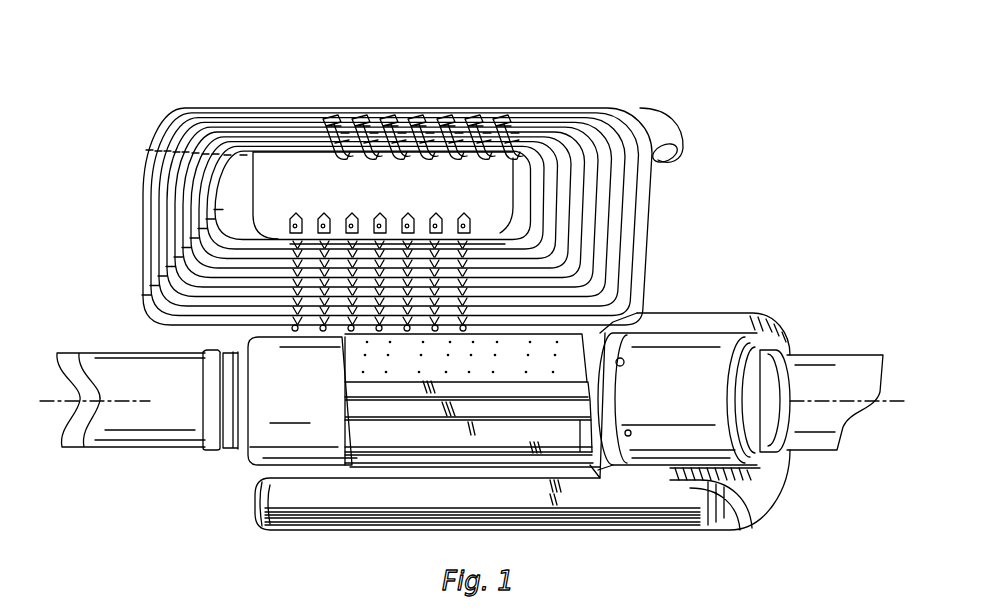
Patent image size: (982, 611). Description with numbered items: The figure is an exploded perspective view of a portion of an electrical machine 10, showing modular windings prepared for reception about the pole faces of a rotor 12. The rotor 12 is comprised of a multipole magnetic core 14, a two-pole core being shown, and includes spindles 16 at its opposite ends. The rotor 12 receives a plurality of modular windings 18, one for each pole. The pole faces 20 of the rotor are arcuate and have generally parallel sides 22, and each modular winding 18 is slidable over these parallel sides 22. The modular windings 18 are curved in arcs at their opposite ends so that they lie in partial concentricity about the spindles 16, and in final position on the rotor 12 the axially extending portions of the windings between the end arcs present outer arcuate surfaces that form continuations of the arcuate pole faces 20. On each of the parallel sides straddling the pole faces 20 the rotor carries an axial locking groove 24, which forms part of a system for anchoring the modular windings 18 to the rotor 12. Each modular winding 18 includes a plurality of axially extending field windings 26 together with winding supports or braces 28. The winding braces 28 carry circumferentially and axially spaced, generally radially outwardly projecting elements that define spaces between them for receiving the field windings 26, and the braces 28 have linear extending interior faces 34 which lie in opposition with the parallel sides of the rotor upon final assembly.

The electrical machine 10 is at (136, 121).
The rotor 12 is at (567, 432).
The multipole magnetic core 14 is at (597, 345).
The spindles 16 is at (693, 376).
The modular winding 18 is at (608, 140).
The pole faces 20 is at (355, 347).
The parallel sides 22 is at (373, 412).
The axial locking groove 24 is at (370, 402).
The field windings 26 is at (446, 240).
The winding braces 28 is at (345, 112).
The interior faces 34 is at (450, 118).